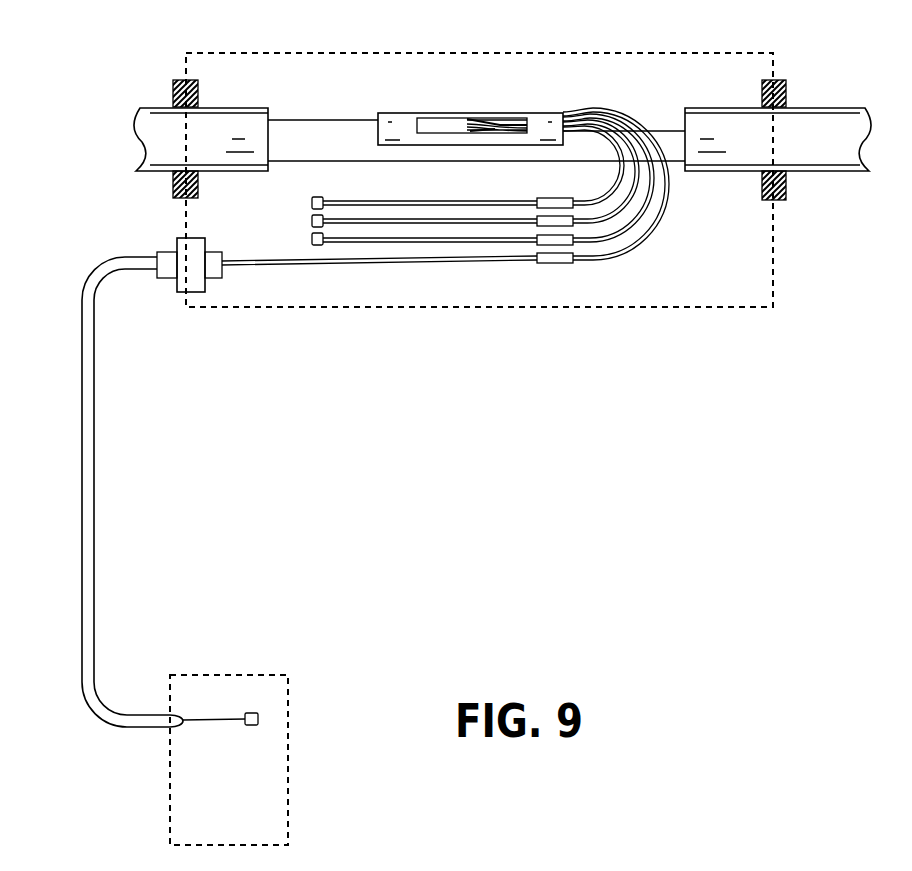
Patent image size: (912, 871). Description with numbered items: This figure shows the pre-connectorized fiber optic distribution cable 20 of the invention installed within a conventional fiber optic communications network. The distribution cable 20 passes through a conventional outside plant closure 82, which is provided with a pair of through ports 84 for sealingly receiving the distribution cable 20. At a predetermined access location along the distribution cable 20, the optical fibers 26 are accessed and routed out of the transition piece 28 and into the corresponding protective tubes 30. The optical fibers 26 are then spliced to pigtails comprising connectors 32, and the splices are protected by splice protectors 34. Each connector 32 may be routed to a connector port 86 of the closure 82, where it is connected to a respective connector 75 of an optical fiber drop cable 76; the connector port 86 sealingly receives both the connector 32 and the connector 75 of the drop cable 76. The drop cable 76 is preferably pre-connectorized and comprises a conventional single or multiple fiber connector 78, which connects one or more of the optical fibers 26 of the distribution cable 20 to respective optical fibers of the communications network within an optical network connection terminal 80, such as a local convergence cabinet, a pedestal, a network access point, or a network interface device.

The pre-connectorized fiber optic distribution cable 20 is at (162, 122).
The optical fibers 26 is at (510, 117).
The transition piece 28 is at (392, 113).
The protective tubes 30 is at (652, 210).
The connectors 32 is at (311, 203).
The splice protectors 34 is at (562, 264).
The connector 75 is at (170, 256).
The optical fiber drop cable 76 is at (82, 421).
The single or multiple fiber connector 78 is at (258, 719).
The optical network connection terminal 80 is at (288, 690).
The outside plant closure 82 is at (776, 298).
The through ports 84 is at (786, 93).
The connector port 86 is at (190, 293).